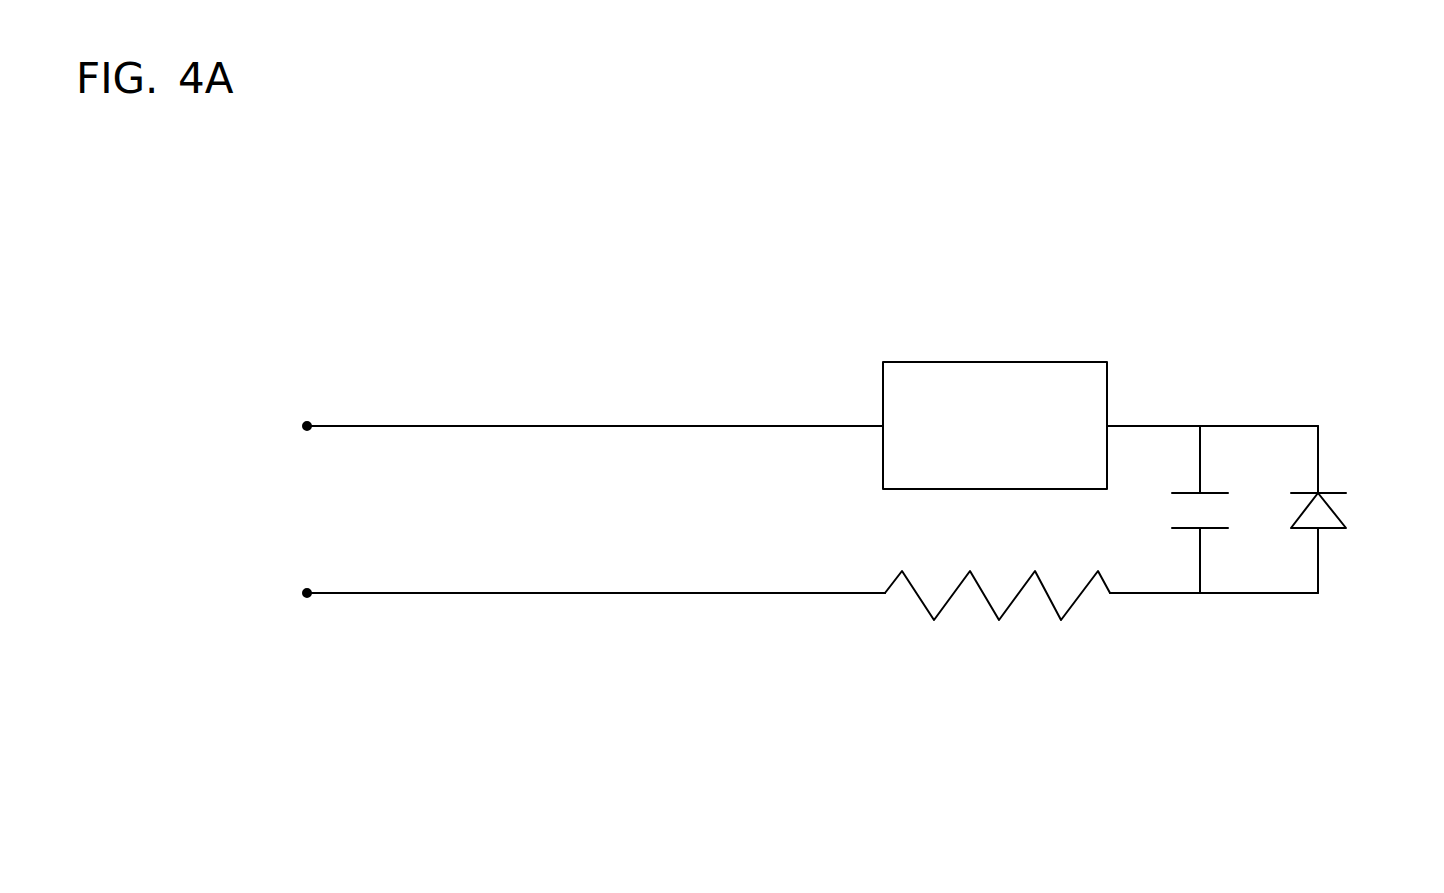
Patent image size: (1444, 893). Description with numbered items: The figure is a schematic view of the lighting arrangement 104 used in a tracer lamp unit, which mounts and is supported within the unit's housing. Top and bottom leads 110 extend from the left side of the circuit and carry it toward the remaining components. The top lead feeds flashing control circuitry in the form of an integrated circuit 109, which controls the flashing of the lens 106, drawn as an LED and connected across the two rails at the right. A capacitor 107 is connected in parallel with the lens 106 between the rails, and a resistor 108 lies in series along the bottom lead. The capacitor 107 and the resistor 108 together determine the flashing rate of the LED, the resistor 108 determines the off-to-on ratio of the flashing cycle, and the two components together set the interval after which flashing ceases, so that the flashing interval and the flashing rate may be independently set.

The lighting arrangement 104 is at (447, 290).
The lens 106 is at (1325, 472).
The capacitor 107 is at (1200, 510).
The resistor 108 is at (1018, 595).
The integrated circuit (IC) 109 is at (993, 362).
The top and bottom leads 110 is at (513, 427).